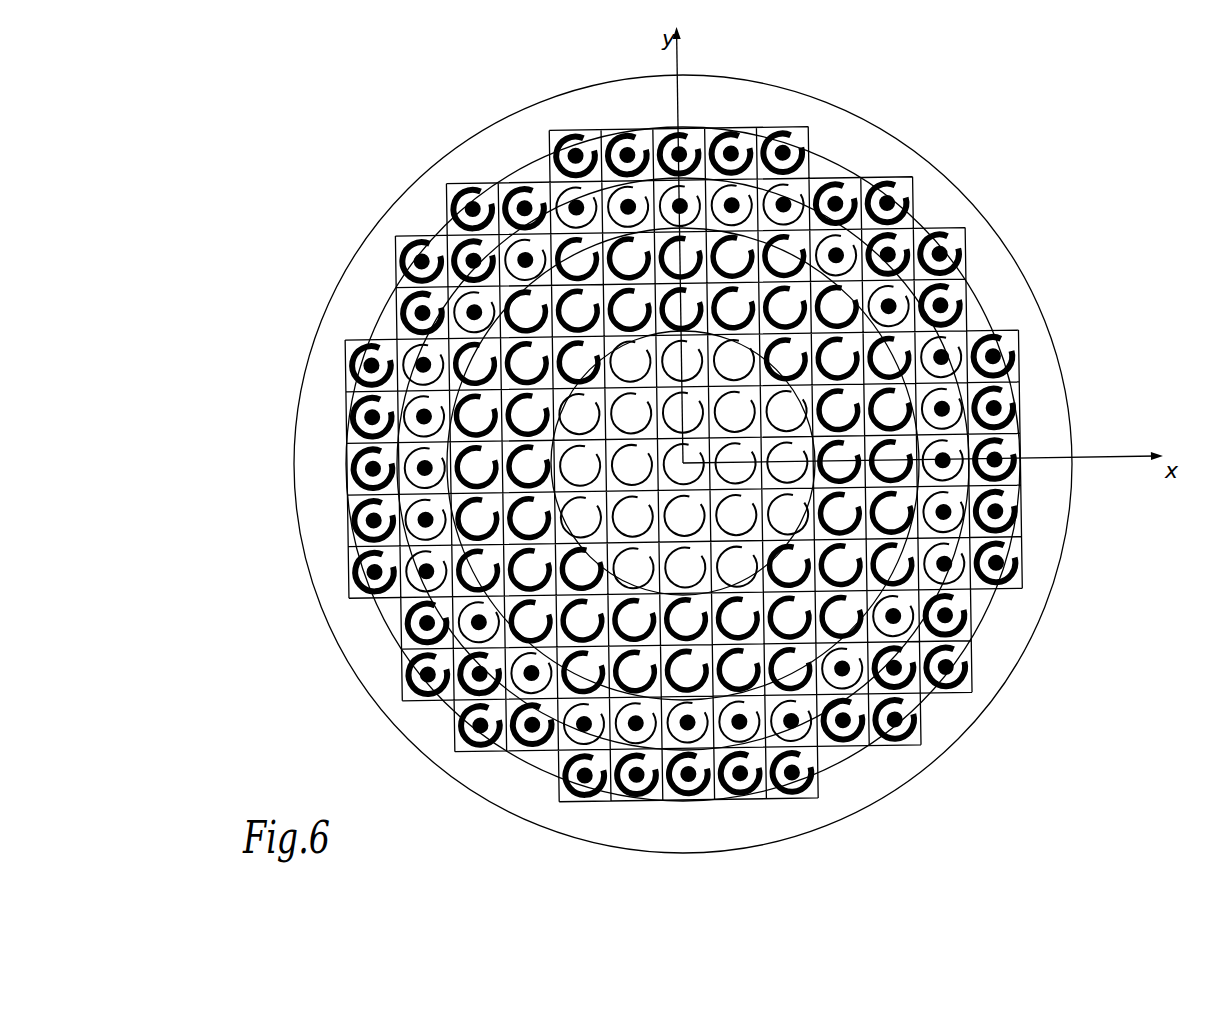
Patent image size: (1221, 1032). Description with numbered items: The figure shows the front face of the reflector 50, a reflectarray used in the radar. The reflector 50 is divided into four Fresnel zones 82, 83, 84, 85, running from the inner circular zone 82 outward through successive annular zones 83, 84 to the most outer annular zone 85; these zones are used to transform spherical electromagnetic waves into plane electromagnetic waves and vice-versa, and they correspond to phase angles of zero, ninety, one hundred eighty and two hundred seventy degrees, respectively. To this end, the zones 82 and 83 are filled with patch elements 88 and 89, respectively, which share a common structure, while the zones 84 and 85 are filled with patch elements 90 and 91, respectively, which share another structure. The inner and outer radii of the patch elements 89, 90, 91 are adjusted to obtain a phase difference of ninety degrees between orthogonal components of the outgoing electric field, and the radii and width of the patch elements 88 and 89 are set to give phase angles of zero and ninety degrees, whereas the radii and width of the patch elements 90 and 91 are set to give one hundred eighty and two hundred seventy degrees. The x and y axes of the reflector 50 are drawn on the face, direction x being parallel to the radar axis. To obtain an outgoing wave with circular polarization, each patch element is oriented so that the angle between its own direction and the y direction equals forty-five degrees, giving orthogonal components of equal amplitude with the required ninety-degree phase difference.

The reflector 50 is at (354, 187).
The Fresnel zone 82 is at (792, 511).
The Fresnel zone 83 is at (915, 500).
The Fresnel zone 84 is at (1023, 438).
The Fresnel zone 85 is at (966, 382).
The patch elements 88 is at (844, 672).
The patch elements 89 is at (742, 780).
The patch elements 90 is at (562, 203).
The patch elements 91 is at (944, 356).